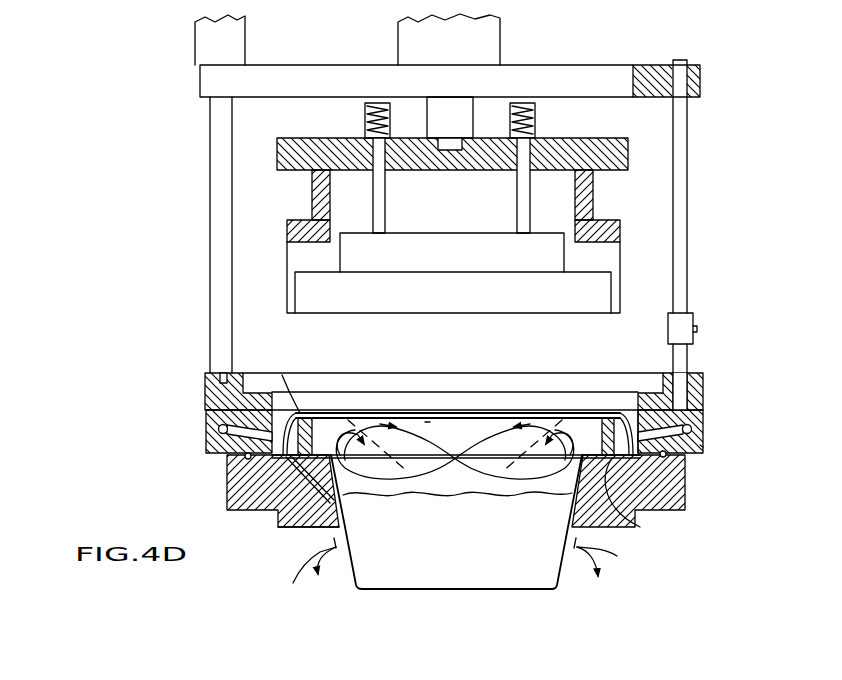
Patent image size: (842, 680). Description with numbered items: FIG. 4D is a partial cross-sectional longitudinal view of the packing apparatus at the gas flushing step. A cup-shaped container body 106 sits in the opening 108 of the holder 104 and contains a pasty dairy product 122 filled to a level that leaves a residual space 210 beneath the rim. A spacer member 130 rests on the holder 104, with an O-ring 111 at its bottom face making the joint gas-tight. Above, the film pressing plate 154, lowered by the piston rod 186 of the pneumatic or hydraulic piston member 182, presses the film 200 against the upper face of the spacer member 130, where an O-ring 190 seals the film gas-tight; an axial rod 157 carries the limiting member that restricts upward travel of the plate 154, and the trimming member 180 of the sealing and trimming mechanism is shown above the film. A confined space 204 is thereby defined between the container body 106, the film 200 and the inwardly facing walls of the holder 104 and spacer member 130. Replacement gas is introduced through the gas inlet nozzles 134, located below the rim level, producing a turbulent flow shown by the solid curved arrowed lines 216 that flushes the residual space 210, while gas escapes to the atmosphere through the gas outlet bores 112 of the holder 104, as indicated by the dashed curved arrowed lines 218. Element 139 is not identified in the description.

The pneumatic or hydraulic piston member 182 is at (208, 44).
The piston rod 186 is at (218, 138).
The axial rod 157 is at (683, 212).
The trimming member 180 is at (287, 257).
The web film edge 139 is at (282, 375).
The film 200 is at (357, 413).
The solid curved arrowed lines 216 is at (463, 433).
The residual space 210 is at (425, 422).
The O-ring 190 is at (243, 395).
The film pressing plate 154 is at (703, 393).
The gas inlet nozzles 134 is at (220, 433).
The spacer member 130 is at (705, 438).
The confined space 204 is at (703, 447).
The holder 104 is at (687, 482).
The O-ring 111 is at (228, 470).
The gas outlet bores 112 is at (277, 493).
The opening 108 is at (332, 528).
The dashed curved arrowed lines 218 is at (468, 577).
The dairy product 122 is at (402, 523).
The cup-shape container body 106 is at (563, 570).